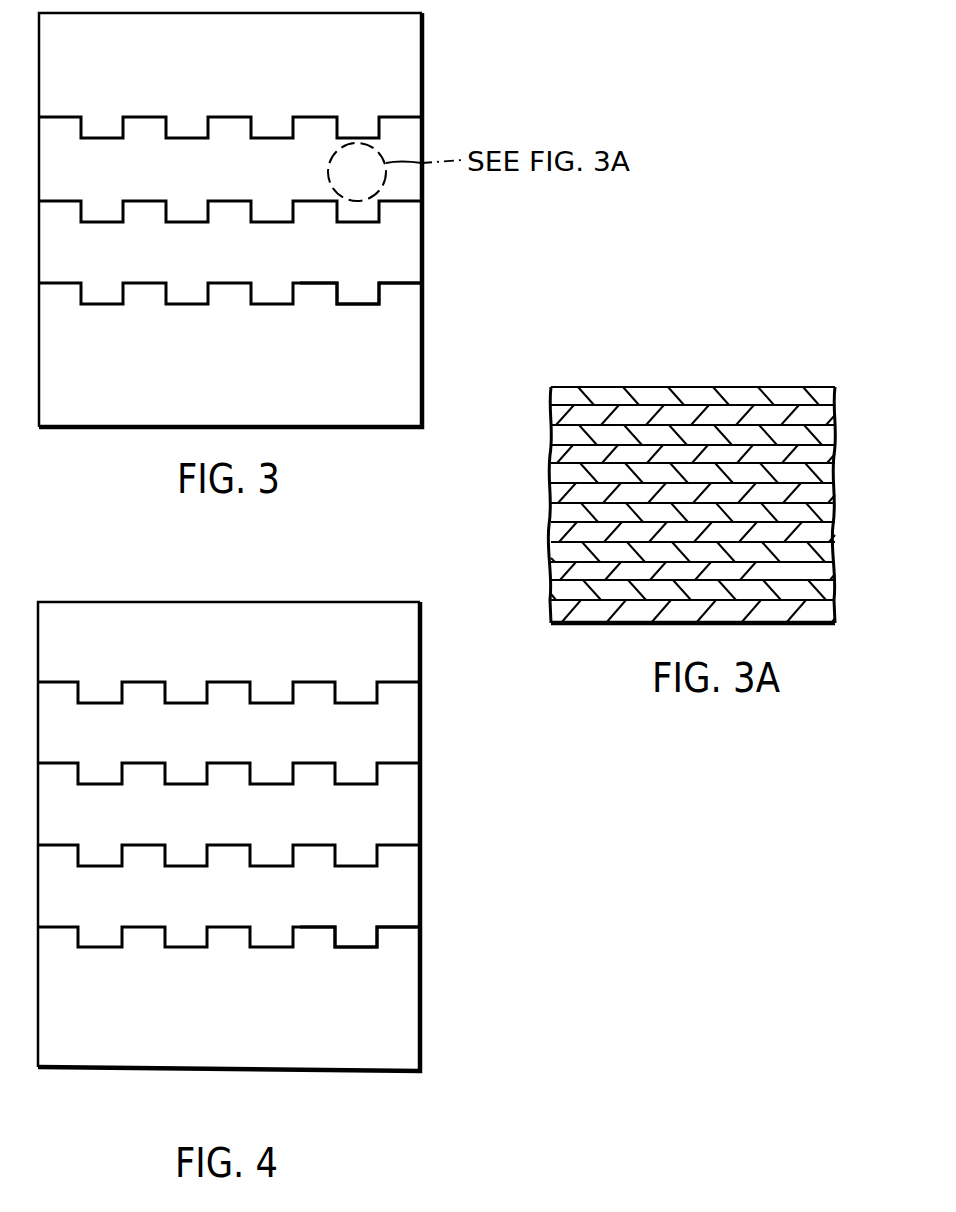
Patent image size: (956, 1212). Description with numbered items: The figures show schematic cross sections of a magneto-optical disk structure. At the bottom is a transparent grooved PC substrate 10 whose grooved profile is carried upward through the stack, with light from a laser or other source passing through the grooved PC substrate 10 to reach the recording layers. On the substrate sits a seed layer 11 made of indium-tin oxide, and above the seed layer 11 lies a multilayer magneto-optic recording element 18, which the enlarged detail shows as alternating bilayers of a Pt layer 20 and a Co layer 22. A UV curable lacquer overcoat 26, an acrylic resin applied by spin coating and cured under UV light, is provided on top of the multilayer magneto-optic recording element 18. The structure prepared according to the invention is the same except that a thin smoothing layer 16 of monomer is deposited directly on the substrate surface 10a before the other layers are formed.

In FIG. 3, the grooved PC substrate 10 is at (412, 354).
In FIG. 4, the grooved PC substrate 10 is at (408, 1005).
In FIG. 3, the substrate surface 10a is at (405, 284).
In FIG. 4, the substrate surface 10a is at (405, 928).
In FIG. 3, the seed layer 11 is at (407, 240).
In FIG. 4, the seed layer 11 is at (410, 800).
In FIG. 4, the thin smoothing layer 16 is at (407, 880).
In FIG. 3, the multilayer magneto-optic recording element 18 is at (413, 133).
In FIG. 4, the multilayer magneto-optic recording element 18 is at (408, 728).
In FIG. 3A, the Pt layer 20 is at (835, 610).
In FIG. 3A, the Co layer 22 is at (828, 587).
In FIG. 3, the UV curable lacquer overcoat 26 is at (413, 58).
In FIG. 4, the UV curable lacquer overcoat 26 is at (410, 663).